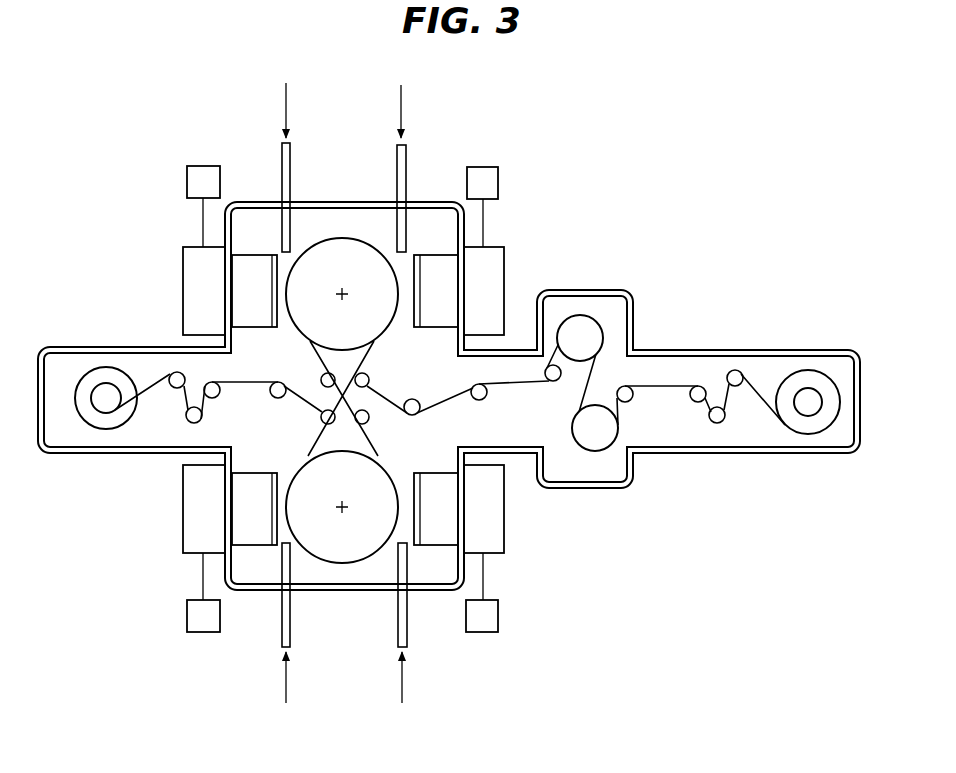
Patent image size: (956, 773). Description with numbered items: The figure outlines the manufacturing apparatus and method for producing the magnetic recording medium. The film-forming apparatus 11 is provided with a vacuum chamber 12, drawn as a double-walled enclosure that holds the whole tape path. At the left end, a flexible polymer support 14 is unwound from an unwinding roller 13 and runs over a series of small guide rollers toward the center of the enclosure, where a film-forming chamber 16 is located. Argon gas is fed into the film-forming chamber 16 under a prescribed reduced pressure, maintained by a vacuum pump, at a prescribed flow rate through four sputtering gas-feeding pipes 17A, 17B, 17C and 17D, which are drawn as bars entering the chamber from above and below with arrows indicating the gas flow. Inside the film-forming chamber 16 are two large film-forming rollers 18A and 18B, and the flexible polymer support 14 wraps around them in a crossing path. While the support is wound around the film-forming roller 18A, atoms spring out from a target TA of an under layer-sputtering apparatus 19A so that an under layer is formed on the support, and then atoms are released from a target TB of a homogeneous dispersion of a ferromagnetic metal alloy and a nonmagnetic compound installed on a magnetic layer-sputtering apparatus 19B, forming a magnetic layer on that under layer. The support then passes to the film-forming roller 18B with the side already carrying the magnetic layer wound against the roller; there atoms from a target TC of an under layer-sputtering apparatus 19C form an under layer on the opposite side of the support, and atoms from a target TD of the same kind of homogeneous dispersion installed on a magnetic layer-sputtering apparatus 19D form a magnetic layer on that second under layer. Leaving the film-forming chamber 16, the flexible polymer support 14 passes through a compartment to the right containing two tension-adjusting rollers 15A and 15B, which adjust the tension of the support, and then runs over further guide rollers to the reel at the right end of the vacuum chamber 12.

The film-forming apparatus 11 is at (90, 149).
The vacuum chamber 12 is at (142, 338).
The unwinding roller 13 is at (808, 393).
The flexible polymer support 14 is at (525, 383).
The tension-adjusting roller 15A is at (578, 320).
The tension-adjusting roller 15B is at (595, 442).
The film-forming chamber 16 is at (369, 197).
The sputtering gas-feeding pipe 17A is at (408, 160).
The sputtering gas-feeding pipe 17B is at (278, 160).
The sputtering gas-feeding pipe 17C is at (407, 635).
The sputtering gas-feeding pipe 17D is at (280, 635).
The film-forming roller 18A is at (320, 253).
The film-forming roller 18B is at (342, 550).
The under layer-sputtering apparatus 19A is at (490, 280).
The magnetic layer-sputtering apparatus 19B is at (198, 277).
The under layer-sputtering apparatus 19C is at (485, 535).
The magnetic layer-sputtering apparatus 19D is at (203, 535).
The target TA is at (420, 255).
The target TB is at (272, 255).
The target TC is at (415, 545).
The target TD is at (270, 545).